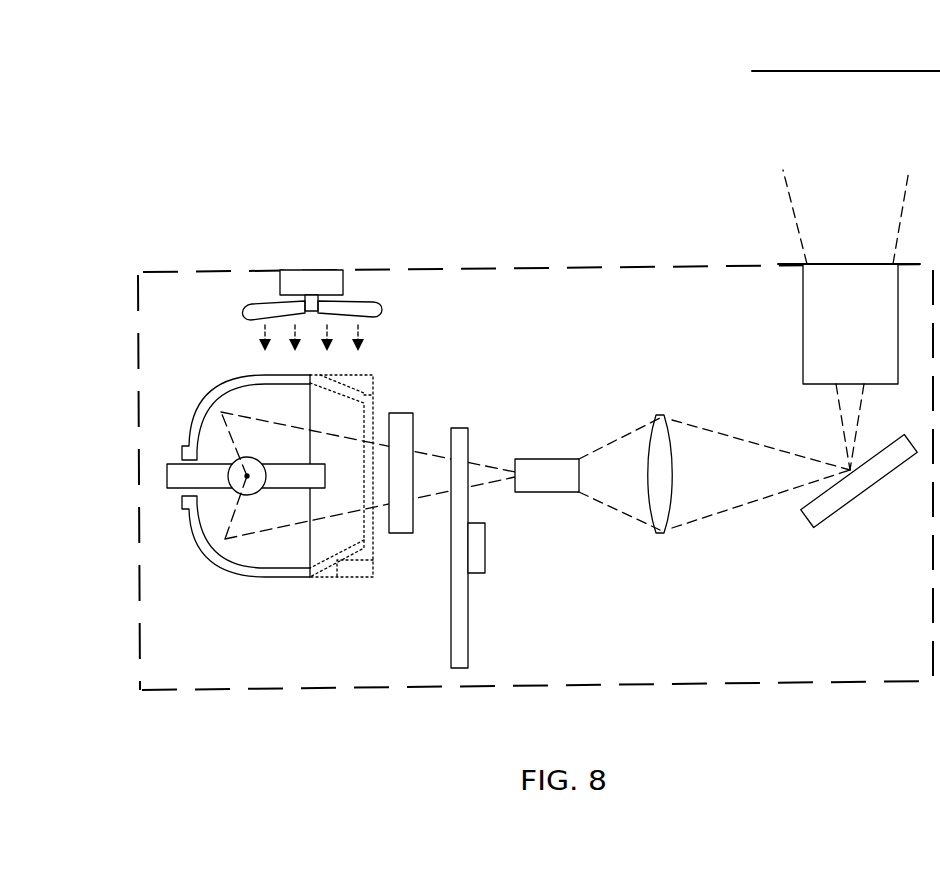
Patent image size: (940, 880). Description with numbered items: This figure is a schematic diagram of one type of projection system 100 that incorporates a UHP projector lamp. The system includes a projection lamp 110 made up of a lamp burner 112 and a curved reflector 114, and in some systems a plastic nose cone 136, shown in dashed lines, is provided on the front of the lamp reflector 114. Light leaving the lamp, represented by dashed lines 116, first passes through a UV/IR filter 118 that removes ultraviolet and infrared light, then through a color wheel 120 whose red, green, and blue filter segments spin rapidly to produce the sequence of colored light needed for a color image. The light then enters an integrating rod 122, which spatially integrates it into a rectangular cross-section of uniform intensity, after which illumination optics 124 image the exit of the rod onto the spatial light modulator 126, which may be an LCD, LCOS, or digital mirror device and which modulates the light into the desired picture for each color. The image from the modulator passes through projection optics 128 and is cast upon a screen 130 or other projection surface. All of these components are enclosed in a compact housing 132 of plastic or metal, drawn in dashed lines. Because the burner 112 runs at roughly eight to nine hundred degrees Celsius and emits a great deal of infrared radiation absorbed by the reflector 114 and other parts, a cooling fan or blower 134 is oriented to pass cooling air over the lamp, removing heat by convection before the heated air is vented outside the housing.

The projection system 100 is at (130, 246).
The projection lamp 110 is at (208, 362).
The lamp burner 112 is at (215, 478).
The curved reflector 114 is at (255, 563).
The dashed lines 116 is at (428, 455).
The UV/IR filter 118 is at (402, 526).
The color wheel 120 is at (470, 628).
The integrating rod 122 is at (551, 476).
The illumination optics 124 is at (653, 448).
The spatial light modulator 126 is at (845, 495).
The projection optics 128 is at (849, 320).
The screen 130 is at (782, 73).
The housing 132 is at (215, 692).
The cooling fan 134 is at (303, 278).
The plastic nose cone 136 is at (335, 564).